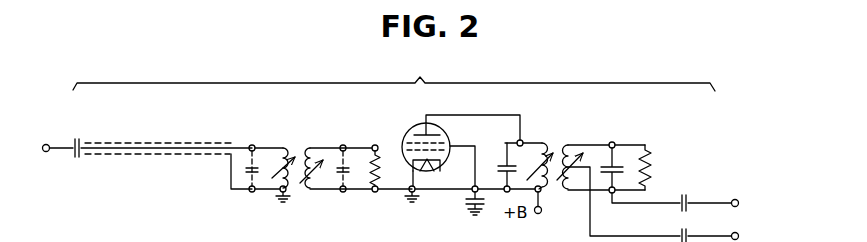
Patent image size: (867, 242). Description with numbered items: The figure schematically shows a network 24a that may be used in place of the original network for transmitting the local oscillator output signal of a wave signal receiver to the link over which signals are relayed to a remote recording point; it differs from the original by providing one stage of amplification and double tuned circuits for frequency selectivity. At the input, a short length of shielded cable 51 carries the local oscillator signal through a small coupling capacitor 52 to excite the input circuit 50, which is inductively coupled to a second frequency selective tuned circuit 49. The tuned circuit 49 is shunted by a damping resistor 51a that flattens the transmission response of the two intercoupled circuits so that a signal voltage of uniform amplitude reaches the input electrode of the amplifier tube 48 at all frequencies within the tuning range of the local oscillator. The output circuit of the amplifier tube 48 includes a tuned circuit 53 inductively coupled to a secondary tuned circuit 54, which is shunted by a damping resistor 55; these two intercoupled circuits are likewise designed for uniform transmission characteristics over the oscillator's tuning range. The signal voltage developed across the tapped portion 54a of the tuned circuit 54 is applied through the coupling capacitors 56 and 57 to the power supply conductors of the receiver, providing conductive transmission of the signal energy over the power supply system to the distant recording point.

The network 24a is at (394, 75).
The amplifier tube 48 is at (408, 133).
The tuned circuit 49 is at (329, 165).
The input circuit 50 is at (268, 160).
The shielded cable 51 is at (121, 141).
The damping resistor 51a is at (382, 178).
The coupling capacitor 52 is at (76, 158).
The tuned circuit 53 is at (524, 159).
The secondary tuned circuit 54 is at (598, 160).
The tapped portion 54a is at (582, 186).
The damping resistor 55 is at (653, 171).
The coupling capacitor 56 is at (692, 199).
The coupling capacitor 57 is at (692, 234).